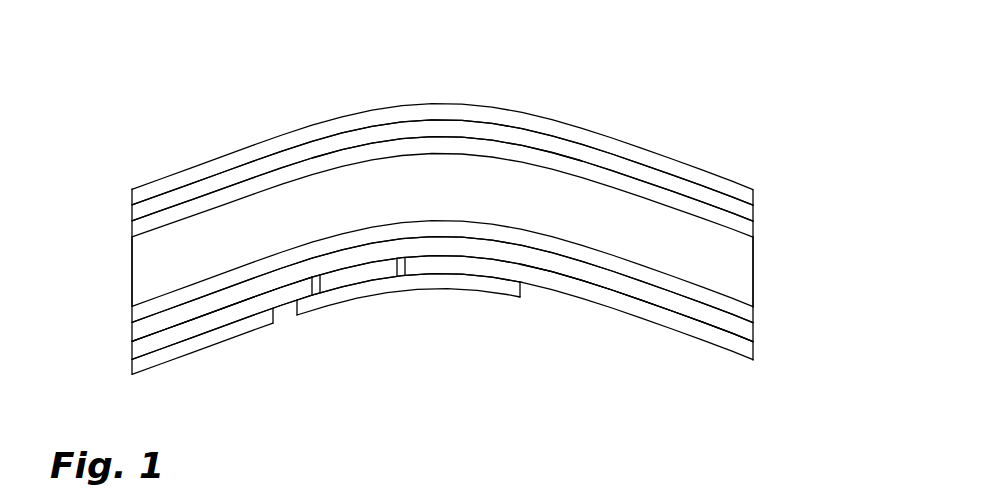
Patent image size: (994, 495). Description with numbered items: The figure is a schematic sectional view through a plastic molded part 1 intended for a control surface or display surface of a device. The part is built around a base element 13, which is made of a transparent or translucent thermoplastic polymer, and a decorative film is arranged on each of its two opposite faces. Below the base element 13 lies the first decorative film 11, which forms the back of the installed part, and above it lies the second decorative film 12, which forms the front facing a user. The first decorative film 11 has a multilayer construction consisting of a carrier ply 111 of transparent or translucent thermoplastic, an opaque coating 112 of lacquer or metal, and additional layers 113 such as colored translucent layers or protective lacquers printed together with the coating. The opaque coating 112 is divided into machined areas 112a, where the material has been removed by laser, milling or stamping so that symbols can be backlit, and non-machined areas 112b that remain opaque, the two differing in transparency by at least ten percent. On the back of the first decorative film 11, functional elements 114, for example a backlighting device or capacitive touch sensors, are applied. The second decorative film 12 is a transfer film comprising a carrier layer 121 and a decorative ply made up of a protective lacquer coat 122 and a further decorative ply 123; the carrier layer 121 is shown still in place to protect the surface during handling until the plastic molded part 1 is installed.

The plastic molded part 1 is at (668, 80).
The first decorative film 11 is at (762, 307).
The second decorative film 12 is at (762, 190).
The base element 13 is at (735, 265).
The carrier ply 111 is at (133, 309).
The opaque coating 112 is at (133, 348).
The machined areas 112a is at (318, 295).
The non-machined areas 112b is at (240, 311).
The additional layers 113 is at (133, 331).
The functional elements 114 is at (133, 366).
The carrier layer 121 is at (133, 193).
The protective lacquer coat 122 is at (133, 211).
The decorative ply 123 is at (140, 231).